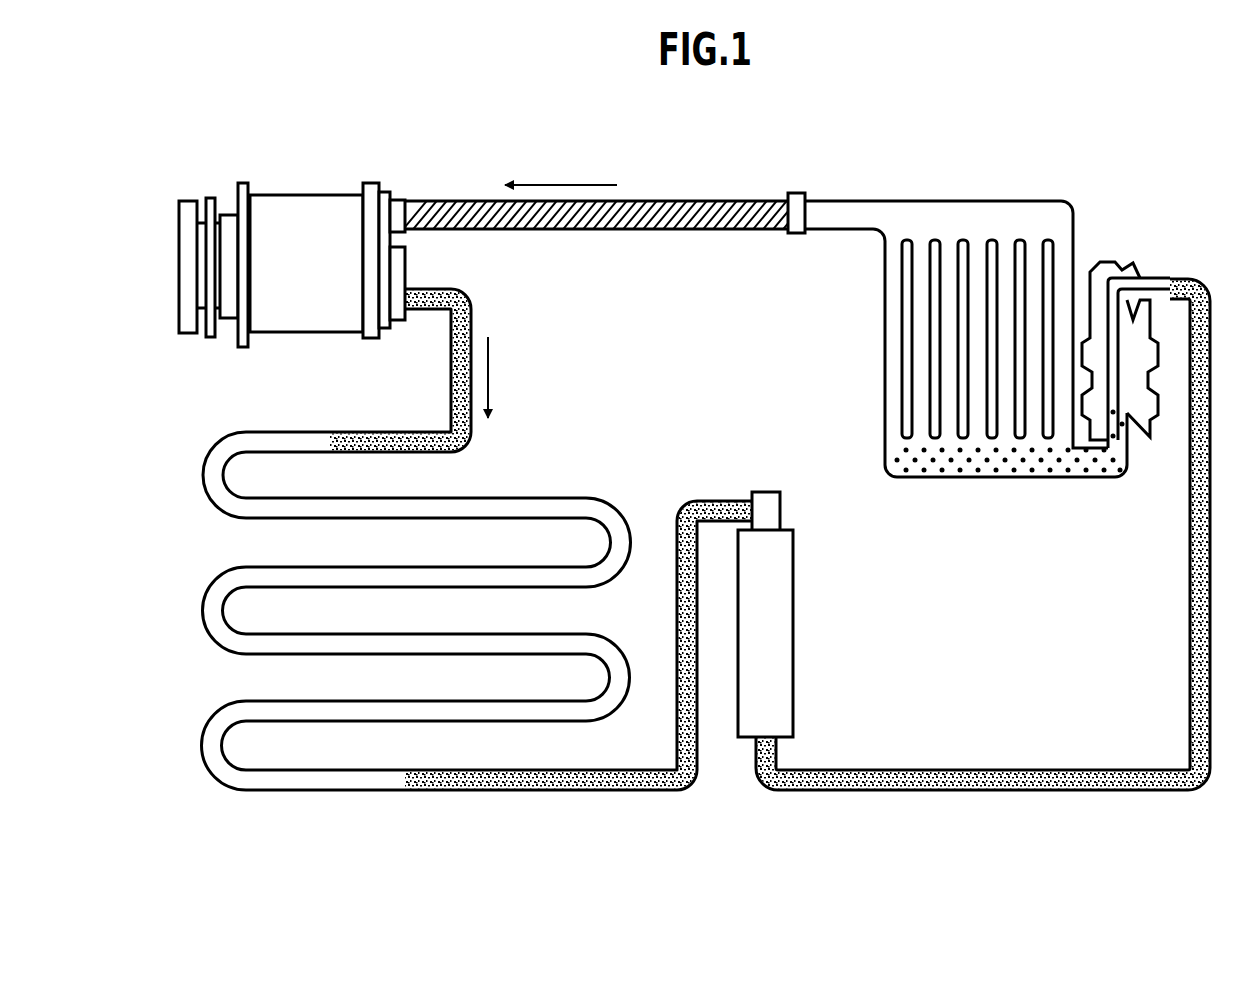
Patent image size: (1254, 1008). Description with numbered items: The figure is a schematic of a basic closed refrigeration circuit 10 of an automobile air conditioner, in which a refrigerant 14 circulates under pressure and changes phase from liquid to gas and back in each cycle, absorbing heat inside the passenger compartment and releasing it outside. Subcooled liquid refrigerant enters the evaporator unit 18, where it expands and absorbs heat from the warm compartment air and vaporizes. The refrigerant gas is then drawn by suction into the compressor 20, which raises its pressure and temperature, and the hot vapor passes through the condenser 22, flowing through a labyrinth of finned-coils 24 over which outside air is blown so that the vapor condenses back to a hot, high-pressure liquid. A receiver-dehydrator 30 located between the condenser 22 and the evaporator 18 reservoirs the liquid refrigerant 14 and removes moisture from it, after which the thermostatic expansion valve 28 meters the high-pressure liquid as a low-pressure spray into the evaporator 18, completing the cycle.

The refrigeration circuit 10 is at (1088, 794).
The refrigerant 14 is at (656, 203).
The evaporator unit 18 is at (893, 385).
The compressor 20 is at (292, 195).
The condenser 22 is at (383, 796).
The finned-coils 24 is at (574, 497).
The thermostatic expansion valve 28 is at (1133, 262).
The receiver-dehydrator 30 is at (787, 598).